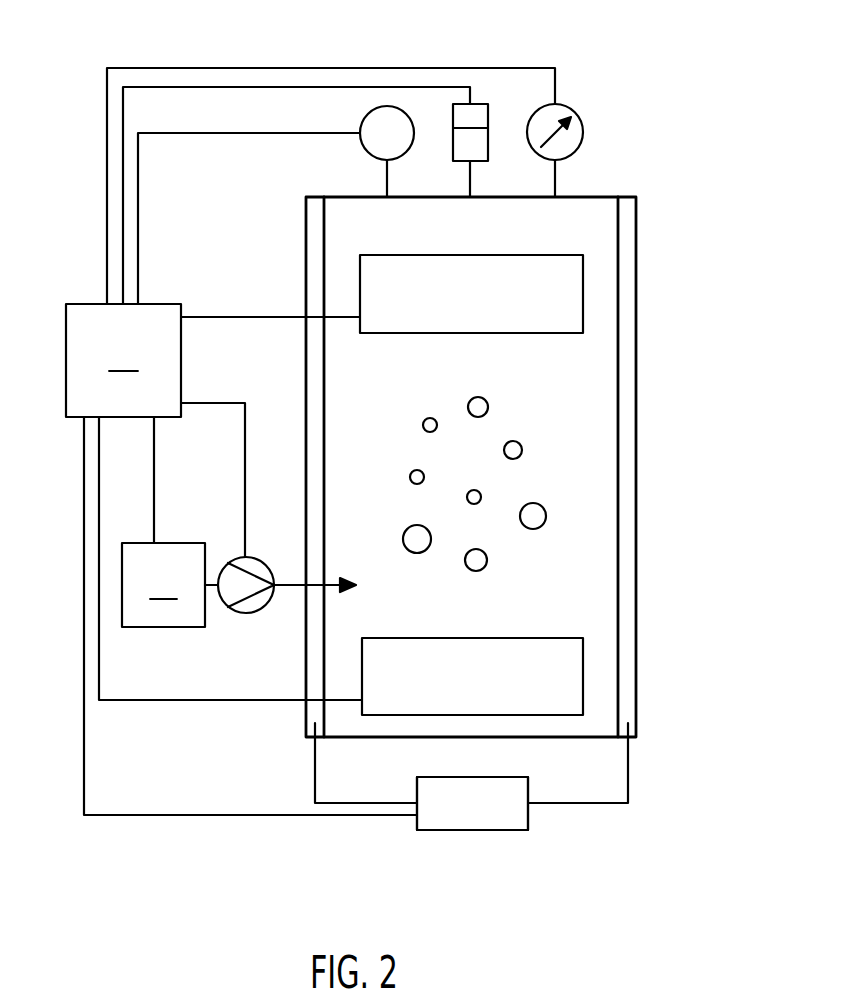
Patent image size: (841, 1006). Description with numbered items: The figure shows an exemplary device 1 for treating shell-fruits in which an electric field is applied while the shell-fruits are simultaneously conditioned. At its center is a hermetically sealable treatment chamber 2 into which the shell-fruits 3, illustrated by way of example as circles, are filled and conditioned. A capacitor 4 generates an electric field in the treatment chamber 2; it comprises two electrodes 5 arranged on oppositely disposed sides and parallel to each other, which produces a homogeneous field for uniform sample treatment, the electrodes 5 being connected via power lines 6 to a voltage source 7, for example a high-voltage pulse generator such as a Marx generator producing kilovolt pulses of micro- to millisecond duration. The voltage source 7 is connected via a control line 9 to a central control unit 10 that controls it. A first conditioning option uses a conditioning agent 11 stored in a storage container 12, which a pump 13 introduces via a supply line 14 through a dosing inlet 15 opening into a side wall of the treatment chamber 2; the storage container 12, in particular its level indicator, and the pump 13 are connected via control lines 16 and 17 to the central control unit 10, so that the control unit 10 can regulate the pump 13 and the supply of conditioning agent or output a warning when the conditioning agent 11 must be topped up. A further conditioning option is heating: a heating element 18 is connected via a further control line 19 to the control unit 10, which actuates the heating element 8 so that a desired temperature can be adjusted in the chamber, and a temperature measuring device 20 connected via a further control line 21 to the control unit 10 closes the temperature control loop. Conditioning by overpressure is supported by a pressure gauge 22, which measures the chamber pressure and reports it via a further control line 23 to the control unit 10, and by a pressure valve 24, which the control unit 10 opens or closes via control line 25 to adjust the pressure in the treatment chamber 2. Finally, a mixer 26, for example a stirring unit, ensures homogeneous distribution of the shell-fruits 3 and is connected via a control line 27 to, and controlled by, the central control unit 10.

The device 1 is at (687, 68).
The treatment chamber 2 is at (580, 386).
The shell-fruits 3 is at (487, 557).
The capacitor 4 is at (638, 848).
The electrodes 5 is at (308, 714).
The power lines 6 is at (315, 770).
The voltage source 7 is at (508, 830).
The cooling device 8 is at (472, 803).
The control line 9 is at (84, 777).
The central control unit 10 is at (123, 360).
The conditioning agent 11 is at (163, 585).
The storage container 12 is at (122, 605).
The pump 13 is at (247, 613).
The supply line 14 is at (290, 583).
The dosing inlet 15 is at (328, 582).
The control line 16 is at (154, 450).
The control line 17 is at (245, 483).
The heating element 18 is at (583, 267).
The control line 19 is at (237, 317).
The temperature measuring device 20 is at (406, 152).
The control line 21 is at (232, 135).
The pressure gauge 22 is at (578, 112).
The control line 23 is at (505, 68).
The pressure valve 24 is at (488, 115).
The control line 25 is at (173, 87).
The mixer 26 is at (583, 650).
The control line 27 is at (143, 703).